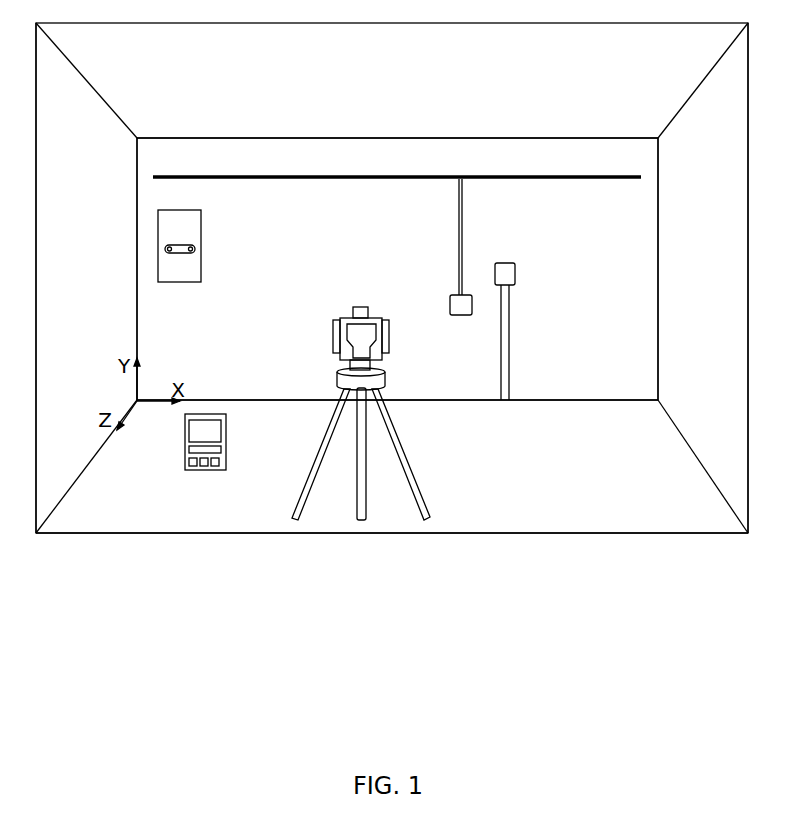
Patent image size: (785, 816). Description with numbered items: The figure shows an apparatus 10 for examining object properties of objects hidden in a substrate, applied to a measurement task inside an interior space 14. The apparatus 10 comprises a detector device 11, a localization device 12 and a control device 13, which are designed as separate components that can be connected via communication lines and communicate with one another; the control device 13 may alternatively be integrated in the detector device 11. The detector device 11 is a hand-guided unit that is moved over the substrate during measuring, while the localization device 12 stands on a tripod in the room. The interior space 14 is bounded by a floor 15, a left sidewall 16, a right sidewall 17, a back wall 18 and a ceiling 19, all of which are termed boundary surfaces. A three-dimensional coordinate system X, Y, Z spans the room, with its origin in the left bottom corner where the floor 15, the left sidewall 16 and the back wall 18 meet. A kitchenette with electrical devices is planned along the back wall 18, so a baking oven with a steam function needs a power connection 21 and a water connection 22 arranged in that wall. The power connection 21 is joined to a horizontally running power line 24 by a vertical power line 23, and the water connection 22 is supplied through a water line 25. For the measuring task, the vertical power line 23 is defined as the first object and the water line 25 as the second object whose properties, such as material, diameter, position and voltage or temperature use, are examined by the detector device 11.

The apparatus 10 is at (193, 562).
The detector device 11 is at (176, 264).
The localization device 12 is at (387, 381).
The control device 13 is at (199, 436).
The interior space 14 is at (637, 515).
The floor 15 is at (658, 462).
The left sidewall 16 is at (66, 271).
The right sidewall 17 is at (683, 269).
The back wall 18 is at (592, 330).
The ceiling 19 is at (378, 92).
The power connection 21 is at (462, 316).
The water connection 22 is at (505, 264).
The vertical power line 23 is at (459, 247).
The horizontal power line 24 is at (281, 180).
The water line 25 is at (509, 358).